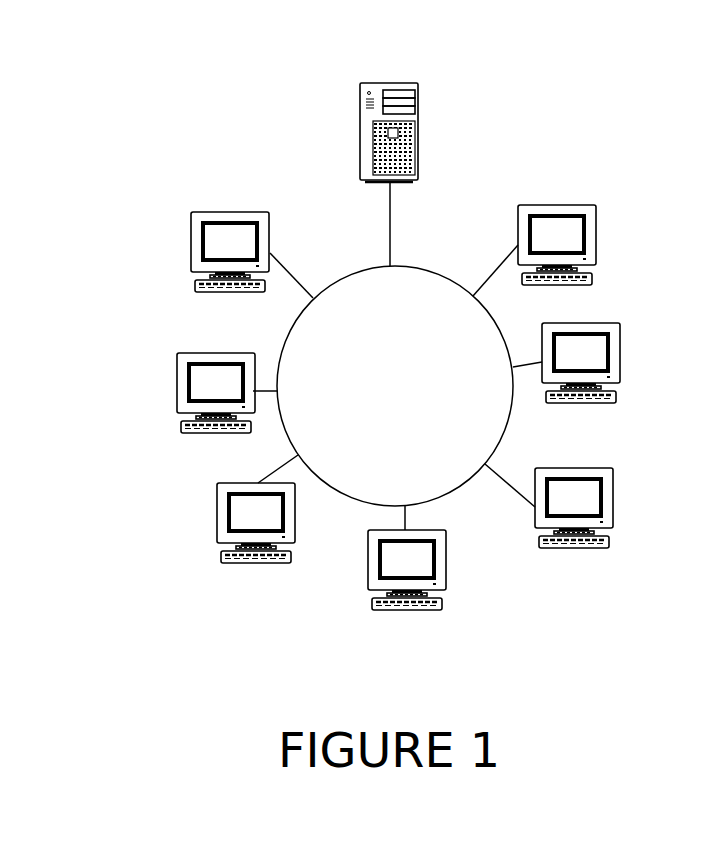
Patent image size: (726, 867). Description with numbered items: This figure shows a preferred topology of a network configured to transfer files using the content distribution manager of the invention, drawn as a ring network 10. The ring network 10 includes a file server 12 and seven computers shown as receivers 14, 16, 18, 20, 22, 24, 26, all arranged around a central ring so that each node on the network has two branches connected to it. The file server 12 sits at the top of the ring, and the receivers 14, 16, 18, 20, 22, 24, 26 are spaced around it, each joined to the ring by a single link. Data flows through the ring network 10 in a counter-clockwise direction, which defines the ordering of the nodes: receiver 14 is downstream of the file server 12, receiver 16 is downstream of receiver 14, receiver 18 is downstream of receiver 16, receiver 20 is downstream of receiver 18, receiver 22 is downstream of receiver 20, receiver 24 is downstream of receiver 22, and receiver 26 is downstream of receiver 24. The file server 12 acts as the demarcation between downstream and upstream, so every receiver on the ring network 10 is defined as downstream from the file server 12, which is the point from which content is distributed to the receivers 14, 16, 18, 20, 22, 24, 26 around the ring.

The ring network 10 is at (291, 158).
The file server 12 is at (390, 83).
The receiver 14 is at (231, 212).
The receiver 16 is at (217, 353).
The receiver 18 is at (217, 522).
The receiver 20 is at (368, 567).
The receiver 22 is at (612, 507).
The receiver 24 is at (618, 361).
The receiver 26 is at (555, 205).